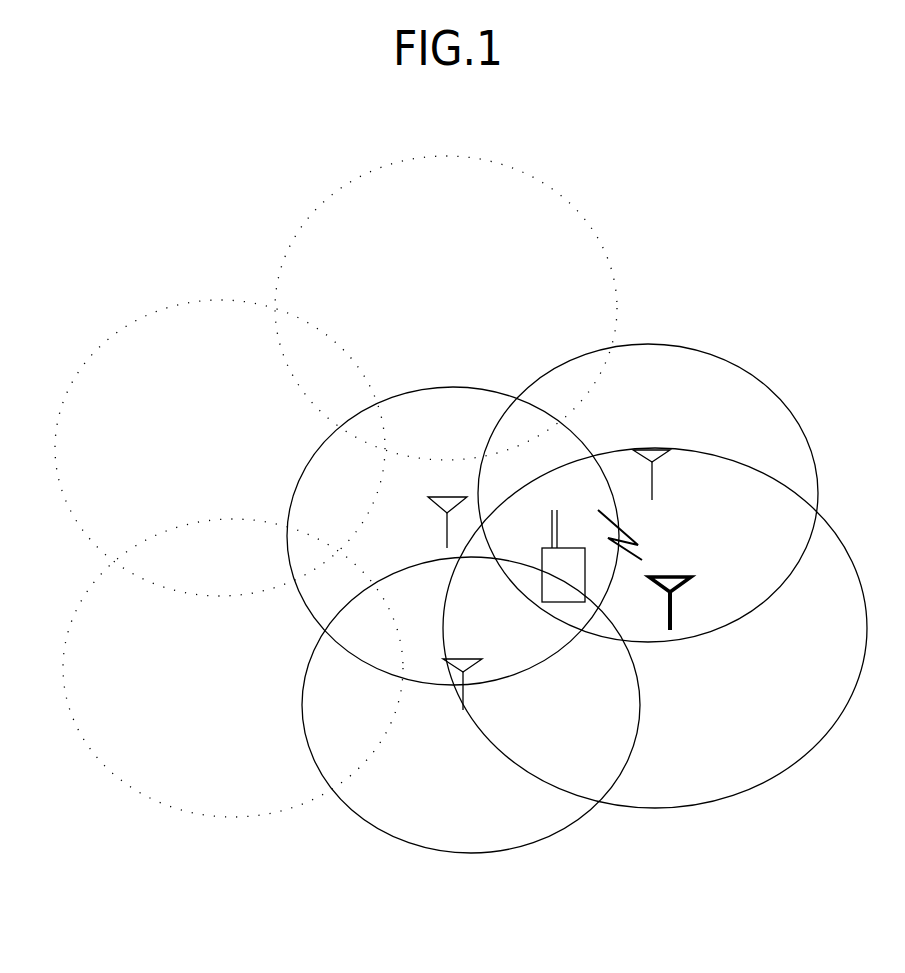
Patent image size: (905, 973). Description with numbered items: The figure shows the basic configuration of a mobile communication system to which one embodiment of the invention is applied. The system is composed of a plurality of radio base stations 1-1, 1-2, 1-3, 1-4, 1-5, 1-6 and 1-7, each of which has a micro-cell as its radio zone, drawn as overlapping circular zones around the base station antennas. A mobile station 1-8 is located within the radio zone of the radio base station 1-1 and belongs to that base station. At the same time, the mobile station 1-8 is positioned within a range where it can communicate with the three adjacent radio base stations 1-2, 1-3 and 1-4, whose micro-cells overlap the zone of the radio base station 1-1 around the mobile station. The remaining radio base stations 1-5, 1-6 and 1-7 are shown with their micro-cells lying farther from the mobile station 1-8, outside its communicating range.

The radio base station 1-1 is at (655, 628).
The radio base station 1-2 is at (648, 493).
The radio base station 1-3 is at (453, 536).
The radio base station 1-4 is at (471, 705).
The radio base station 1-5 is at (233, 668).
The radio base station 1-6 is at (220, 448).
The radio base station 1-7 is at (446, 308).
The mobile station 1-8 is at (563, 556).